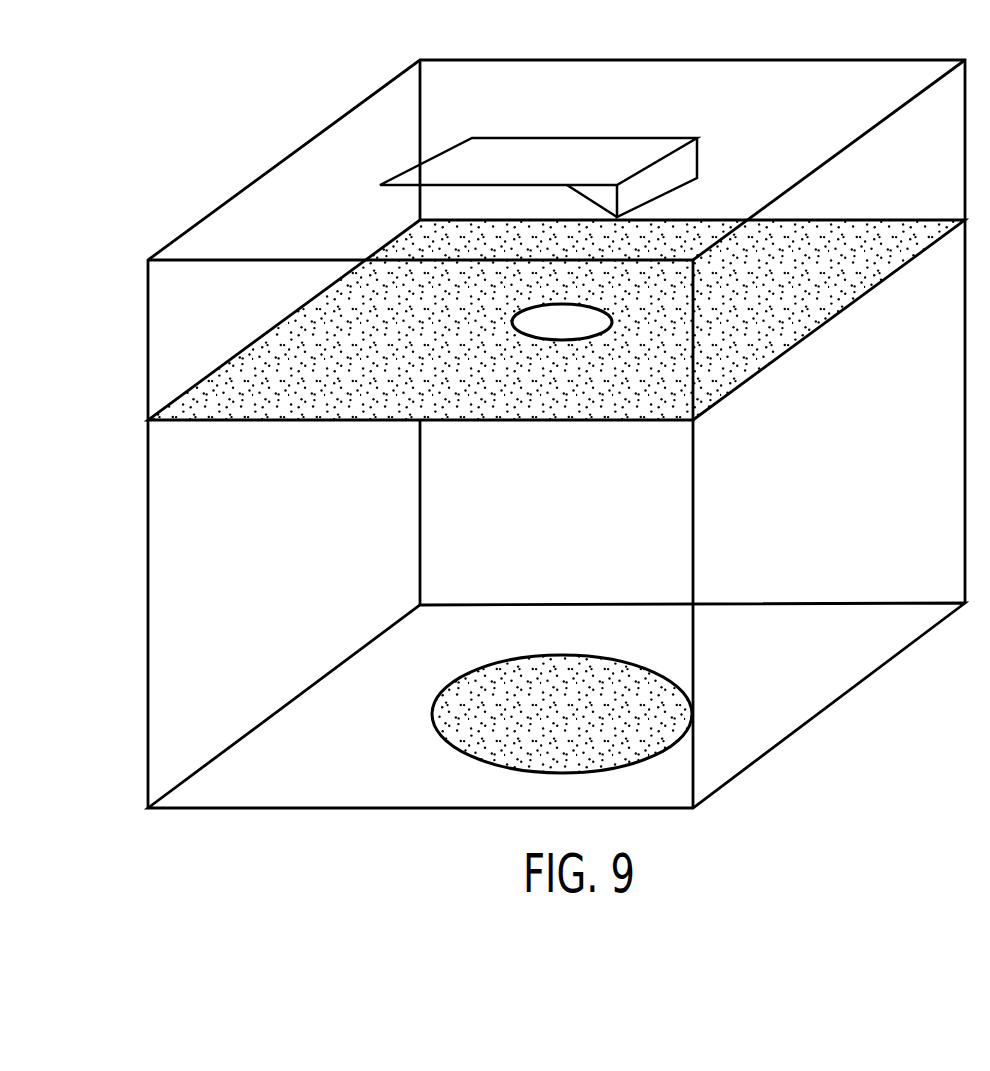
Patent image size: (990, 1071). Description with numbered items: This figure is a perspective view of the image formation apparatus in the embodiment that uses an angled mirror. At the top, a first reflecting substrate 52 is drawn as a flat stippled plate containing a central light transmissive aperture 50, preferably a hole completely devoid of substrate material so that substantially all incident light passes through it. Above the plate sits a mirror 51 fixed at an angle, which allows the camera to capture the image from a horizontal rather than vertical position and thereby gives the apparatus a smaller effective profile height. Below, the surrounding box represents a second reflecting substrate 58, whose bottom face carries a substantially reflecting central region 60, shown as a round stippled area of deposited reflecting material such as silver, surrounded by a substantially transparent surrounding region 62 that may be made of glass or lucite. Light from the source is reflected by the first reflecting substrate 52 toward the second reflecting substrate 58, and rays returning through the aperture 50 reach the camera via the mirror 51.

The central light transmissive aperture 50 is at (581, 315).
The mirror 51 is at (593, 209).
The first reflecting substrate 52 is at (243, 383).
The second reflecting substrate 58 is at (800, 680).
The substantially reflecting central region 60 is at (572, 723).
The substantially transparent surrounding region 62 is at (285, 784).